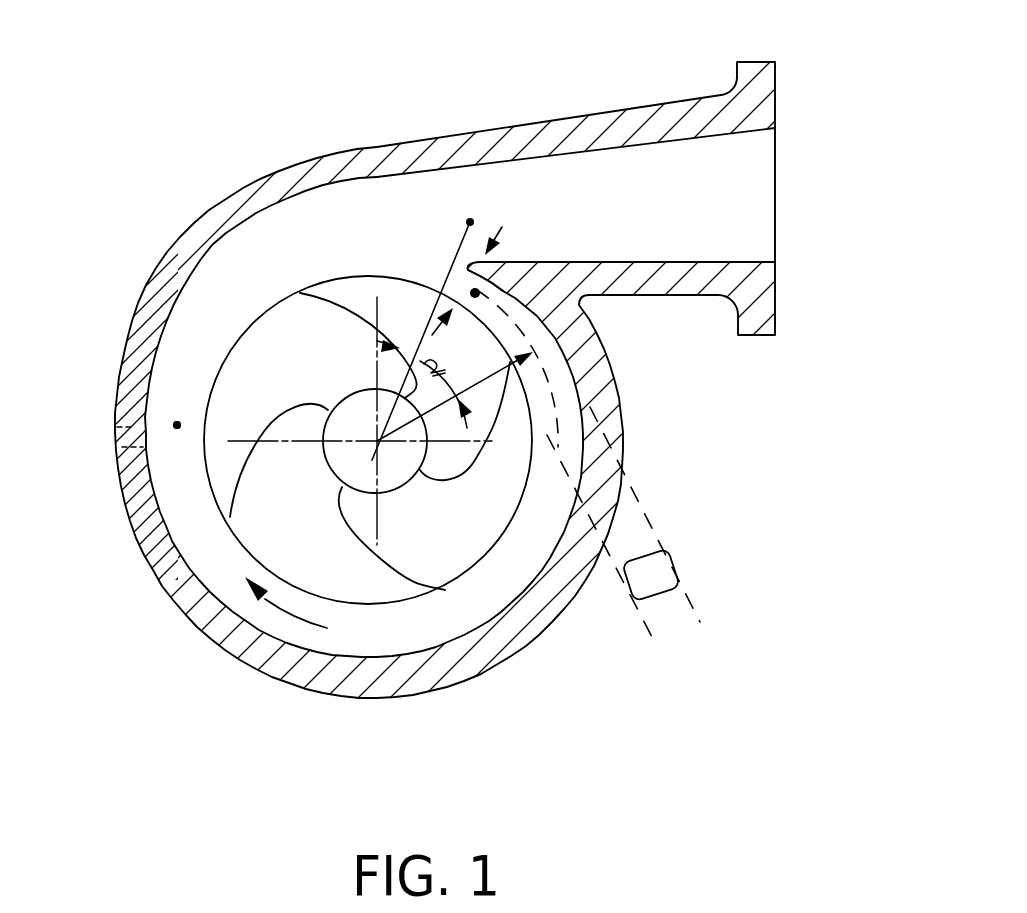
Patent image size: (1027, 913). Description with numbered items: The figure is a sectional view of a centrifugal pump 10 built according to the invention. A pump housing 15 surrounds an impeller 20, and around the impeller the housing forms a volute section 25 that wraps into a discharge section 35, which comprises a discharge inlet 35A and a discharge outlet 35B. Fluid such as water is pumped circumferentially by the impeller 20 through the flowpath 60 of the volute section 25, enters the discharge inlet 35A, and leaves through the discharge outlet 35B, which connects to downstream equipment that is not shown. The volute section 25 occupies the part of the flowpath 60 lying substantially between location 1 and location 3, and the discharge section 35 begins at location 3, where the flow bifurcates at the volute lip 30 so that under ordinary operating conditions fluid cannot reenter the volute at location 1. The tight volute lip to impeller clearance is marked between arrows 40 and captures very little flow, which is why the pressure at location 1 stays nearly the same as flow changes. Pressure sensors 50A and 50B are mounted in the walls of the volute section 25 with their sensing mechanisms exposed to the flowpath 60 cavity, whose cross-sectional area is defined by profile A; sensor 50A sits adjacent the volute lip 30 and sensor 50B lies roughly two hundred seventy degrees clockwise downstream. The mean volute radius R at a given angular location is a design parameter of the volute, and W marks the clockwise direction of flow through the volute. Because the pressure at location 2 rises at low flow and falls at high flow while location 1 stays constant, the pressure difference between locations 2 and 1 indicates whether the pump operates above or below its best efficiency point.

The centrifugal pump 10 is at (205, 110).
The pump housing 15 is at (373, 698).
The impeller 20 is at (220, 480).
The volute section 25 is at (122, 428).
The volute lip 30 is at (436, 232).
The discharge section 35 is at (667, 173).
The discharge inlet 35A is at (583, 183).
The discharge outlet 35B is at (775, 199).
The volute lip to impeller clearance 40 is at (516, 291).
The pressure sensor 50A is at (512, 262).
The pressure sensor 50B is at (175, 428).
The flowpath 60 is at (465, 613).
The location 1 is at (415, 296).
The location 2 is at (180, 402).
The location 3 is at (485, 203).
The mean volute radius R is at (503, 368).
The direction of flow W is at (268, 586).
The cross-sectional area A is at (670, 562).